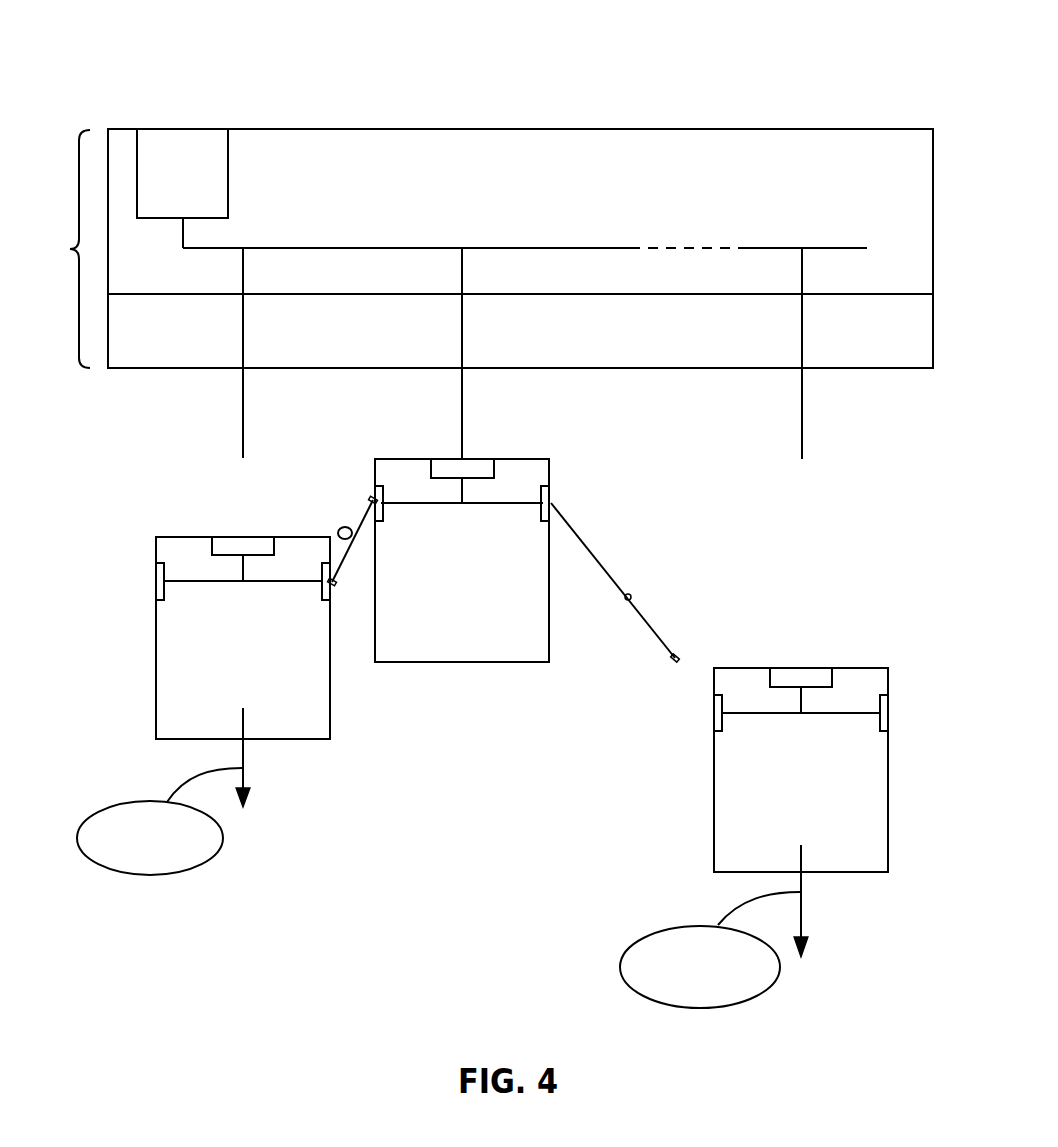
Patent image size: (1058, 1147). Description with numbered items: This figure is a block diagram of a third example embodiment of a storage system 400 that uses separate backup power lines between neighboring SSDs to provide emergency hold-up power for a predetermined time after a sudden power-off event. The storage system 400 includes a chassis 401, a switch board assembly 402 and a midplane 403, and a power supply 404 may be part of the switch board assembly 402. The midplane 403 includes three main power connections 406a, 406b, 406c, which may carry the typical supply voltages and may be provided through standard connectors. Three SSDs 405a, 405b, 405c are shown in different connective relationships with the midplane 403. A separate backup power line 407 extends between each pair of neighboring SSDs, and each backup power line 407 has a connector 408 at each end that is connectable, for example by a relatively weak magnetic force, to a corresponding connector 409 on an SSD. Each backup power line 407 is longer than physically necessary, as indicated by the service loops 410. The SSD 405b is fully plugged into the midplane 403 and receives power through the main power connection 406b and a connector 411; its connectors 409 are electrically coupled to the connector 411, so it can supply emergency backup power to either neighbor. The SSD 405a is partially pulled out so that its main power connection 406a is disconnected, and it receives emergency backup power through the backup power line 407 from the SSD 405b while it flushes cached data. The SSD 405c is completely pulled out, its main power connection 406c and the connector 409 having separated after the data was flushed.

The storage system 400 is at (248, 70).
The chassis 401 is at (475, 248).
The switch board assembly 402 is at (525, 212).
The midplane 403 is at (520, 326).
The power supply 404 is at (182, 188).
The SSD 405a is at (203, 706).
The SSD 405b is at (462, 560).
The SSD 405c is at (754, 838).
The main power connection 406a is at (242, 443).
The main power connection 406b is at (460, 443).
The main power connection 406c is at (800, 443).
The backup power line 407 is at (363, 520).
The connector 408 is at (371, 498).
The connector 409 is at (170, 600).
The service loop 410 is at (337, 532).
The connector 411 is at (212, 543).